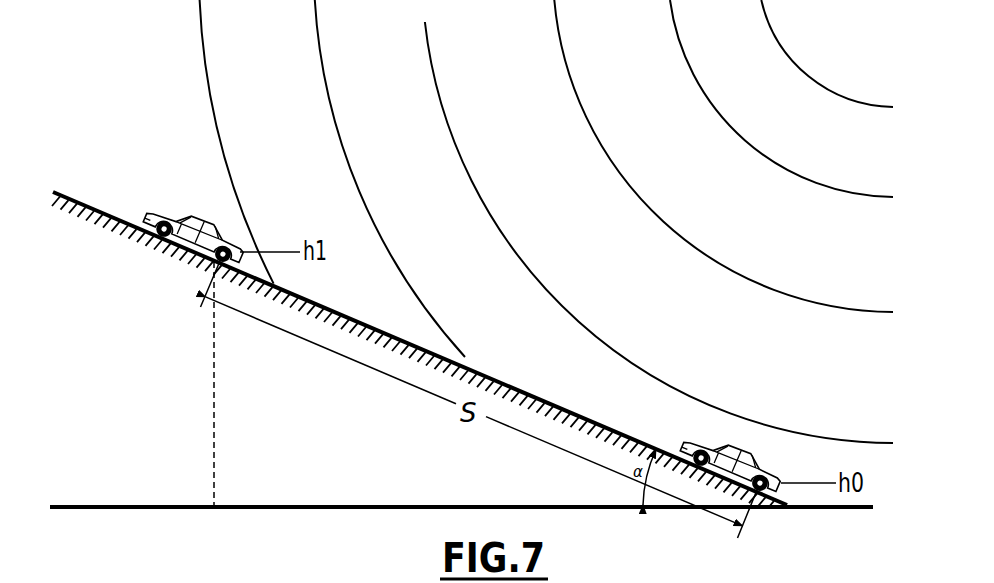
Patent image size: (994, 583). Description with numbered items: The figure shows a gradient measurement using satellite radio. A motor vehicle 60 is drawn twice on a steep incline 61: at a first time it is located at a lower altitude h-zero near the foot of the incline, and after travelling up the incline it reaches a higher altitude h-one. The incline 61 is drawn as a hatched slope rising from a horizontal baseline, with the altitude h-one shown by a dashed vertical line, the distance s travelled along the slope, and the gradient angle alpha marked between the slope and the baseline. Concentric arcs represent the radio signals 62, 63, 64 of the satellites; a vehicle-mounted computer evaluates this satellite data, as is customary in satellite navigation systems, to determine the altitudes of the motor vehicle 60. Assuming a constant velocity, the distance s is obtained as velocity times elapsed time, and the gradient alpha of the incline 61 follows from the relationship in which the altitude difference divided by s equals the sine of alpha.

The motor vehicle 60 is at (204, 215).
The steep incline 61 is at (507, 385).
The radio signal of a satellite 62 is at (497, 221).
The radio signal of a satellite 63 is at (672, 226).
The radio signal of a satellite 64 is at (753, 148).